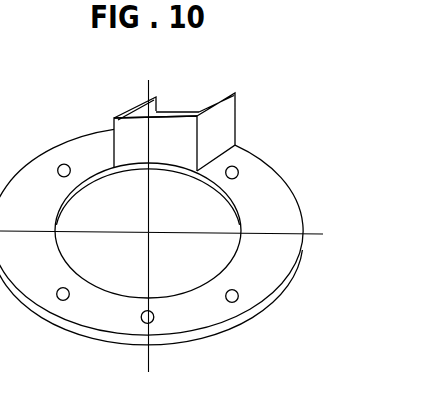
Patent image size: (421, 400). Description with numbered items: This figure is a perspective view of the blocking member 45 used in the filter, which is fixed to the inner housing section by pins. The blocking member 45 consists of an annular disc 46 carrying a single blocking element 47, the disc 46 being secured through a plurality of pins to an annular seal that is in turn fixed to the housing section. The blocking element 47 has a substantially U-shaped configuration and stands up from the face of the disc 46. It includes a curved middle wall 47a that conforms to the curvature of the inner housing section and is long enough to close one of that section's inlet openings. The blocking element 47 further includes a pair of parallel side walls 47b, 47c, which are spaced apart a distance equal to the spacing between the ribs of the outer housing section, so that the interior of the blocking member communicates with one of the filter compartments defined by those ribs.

The blocking member 45 is at (303, 183).
The annular disc 46 is at (293, 226).
The blocking element 47 is at (192, 111).
The curved middle wall 47a is at (181, 113).
The side wall 47b is at (127, 110).
The side wall 47c is at (236, 122).